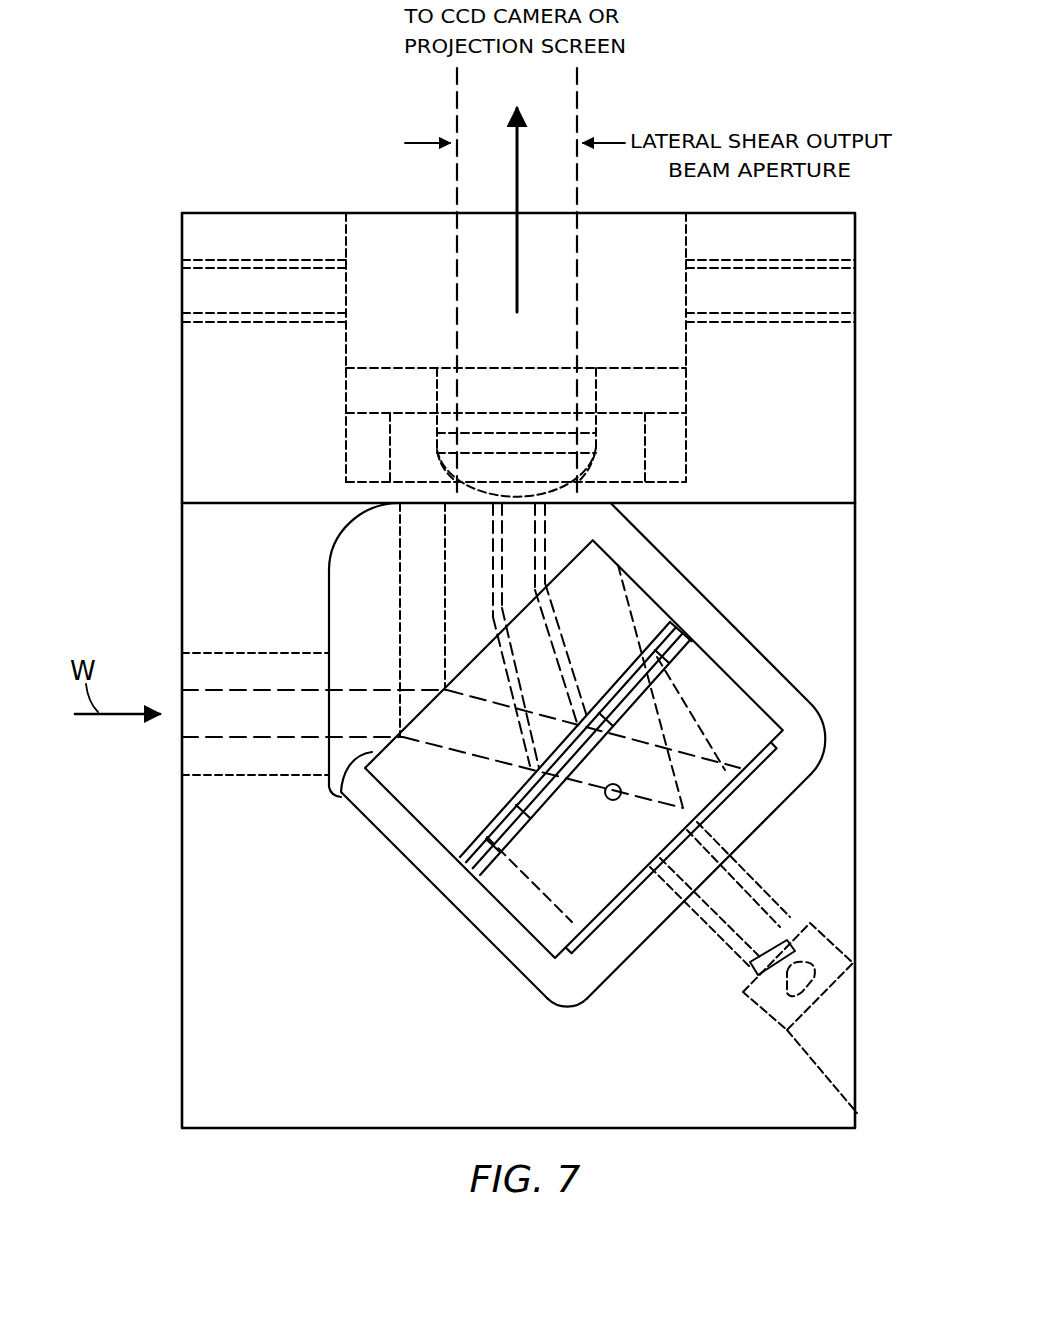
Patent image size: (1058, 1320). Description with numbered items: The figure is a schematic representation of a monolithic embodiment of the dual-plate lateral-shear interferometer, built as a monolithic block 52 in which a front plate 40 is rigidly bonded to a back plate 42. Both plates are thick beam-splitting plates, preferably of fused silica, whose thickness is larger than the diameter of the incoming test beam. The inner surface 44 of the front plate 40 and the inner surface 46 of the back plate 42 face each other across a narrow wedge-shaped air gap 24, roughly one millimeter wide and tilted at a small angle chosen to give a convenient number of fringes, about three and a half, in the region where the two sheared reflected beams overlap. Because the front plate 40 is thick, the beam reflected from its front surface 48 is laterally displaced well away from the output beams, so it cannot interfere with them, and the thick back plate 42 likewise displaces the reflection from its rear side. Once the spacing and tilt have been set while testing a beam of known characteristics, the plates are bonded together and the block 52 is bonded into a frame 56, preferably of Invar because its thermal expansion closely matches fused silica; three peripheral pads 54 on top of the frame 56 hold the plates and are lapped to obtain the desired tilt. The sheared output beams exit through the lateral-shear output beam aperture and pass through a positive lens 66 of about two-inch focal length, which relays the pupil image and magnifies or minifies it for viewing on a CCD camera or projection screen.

The air gap 24 is at (417, 869).
The front plate 40 is at (397, 813).
The back plate 42 is at (616, 909).
The inner surface of front plate 44 is at (480, 818).
The inner surface of back plate 46 is at (510, 813).
The front surface of front plate 48 is at (340, 794).
The monolithic block 52 is at (738, 626).
The peripheral pads 54 is at (563, 757).
The frame 56 is at (565, 992).
The positive lens 66 is at (598, 466).